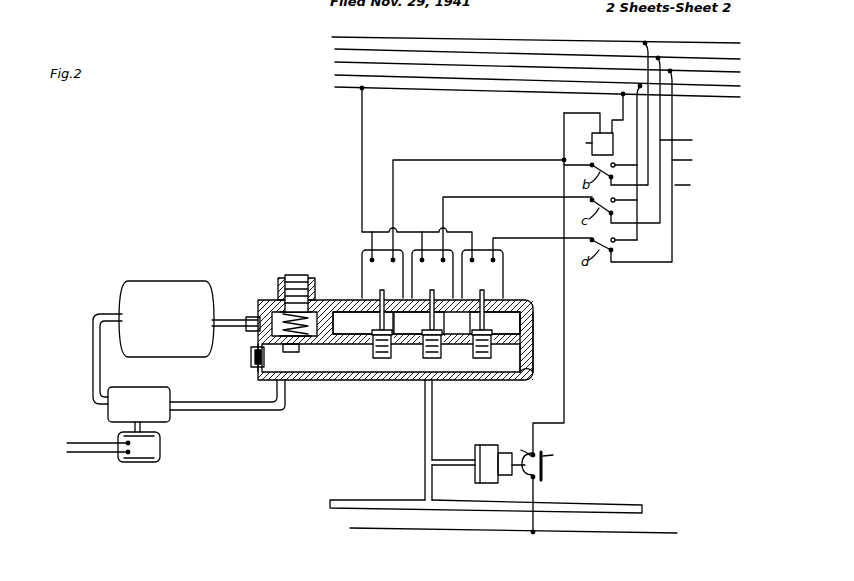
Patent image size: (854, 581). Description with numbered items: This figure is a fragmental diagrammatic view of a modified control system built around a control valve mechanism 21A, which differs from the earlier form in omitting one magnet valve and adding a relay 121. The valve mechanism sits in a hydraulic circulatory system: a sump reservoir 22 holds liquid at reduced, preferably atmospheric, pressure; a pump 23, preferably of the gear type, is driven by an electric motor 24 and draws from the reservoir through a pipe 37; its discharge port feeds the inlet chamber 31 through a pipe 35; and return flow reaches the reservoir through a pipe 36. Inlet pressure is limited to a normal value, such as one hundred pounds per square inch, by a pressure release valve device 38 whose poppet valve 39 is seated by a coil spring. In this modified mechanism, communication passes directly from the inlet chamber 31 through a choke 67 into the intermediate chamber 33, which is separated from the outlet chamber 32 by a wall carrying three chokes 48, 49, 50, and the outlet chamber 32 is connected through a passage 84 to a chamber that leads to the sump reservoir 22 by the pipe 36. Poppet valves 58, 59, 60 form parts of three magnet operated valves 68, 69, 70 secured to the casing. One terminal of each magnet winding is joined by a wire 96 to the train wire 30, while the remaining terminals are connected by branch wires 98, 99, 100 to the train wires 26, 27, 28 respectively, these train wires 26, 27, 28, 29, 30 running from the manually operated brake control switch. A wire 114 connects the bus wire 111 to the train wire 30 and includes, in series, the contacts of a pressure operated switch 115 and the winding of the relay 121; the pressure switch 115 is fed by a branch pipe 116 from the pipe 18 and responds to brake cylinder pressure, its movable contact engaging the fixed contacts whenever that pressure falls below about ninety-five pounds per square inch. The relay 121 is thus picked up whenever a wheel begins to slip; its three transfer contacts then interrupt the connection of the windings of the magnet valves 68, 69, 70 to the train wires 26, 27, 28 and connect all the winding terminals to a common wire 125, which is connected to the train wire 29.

The pipe 18 is at (425, 430).
The control valve mechanism 21A is at (538, 293).
The sump reservoir 22 is at (168, 262).
The pump 23 is at (132, 389).
The electric motor 24 is at (162, 443).
The train wire 26 is at (353, 37).
The train wire 27 is at (413, 45).
The train wire 28 is at (455, 59).
The train wire 29 is at (503, 73).
The train wire 30 is at (411, 95).
The inlet chamber 31 is at (262, 369).
The outlet chamber 32 is at (533, 323).
The intermediate chamber 33 is at (531, 378).
The pipe 35 is at (213, 403).
The pipe 36 is at (240, 316).
The pipe 37 is at (93, 357).
The pressure release valve device 38 is at (288, 274).
The valve 39 is at (258, 341).
The choke 48 is at (386, 360).
The choke 49 is at (436, 360).
The choke 50 is at (484, 360).
The poppet valve 58 is at (372, 326).
The poppet valve 59 is at (422, 328).
The poppet valve 60 is at (473, 328).
The choke 67 is at (312, 362).
The magnet operated valve 68 is at (381, 232).
The magnet operated valve 69 is at (430, 232).
The magnet operated valve 70 is at (484, 218).
The passage 84 is at (322, 314).
The wire 96 is at (362, 120).
The branch wire 98 is at (484, 162).
The branch wire 99 is at (507, 195).
The branch wire 100 is at (543, 233).
The bus wire 111 is at (470, 530).
The wire 114 is at (535, 489).
The pressure operated switch 115 is at (474, 481).
The branch pipe 116 is at (462, 455).
The relay 121 is at (606, 122).
The common wire 125 is at (648, 118).